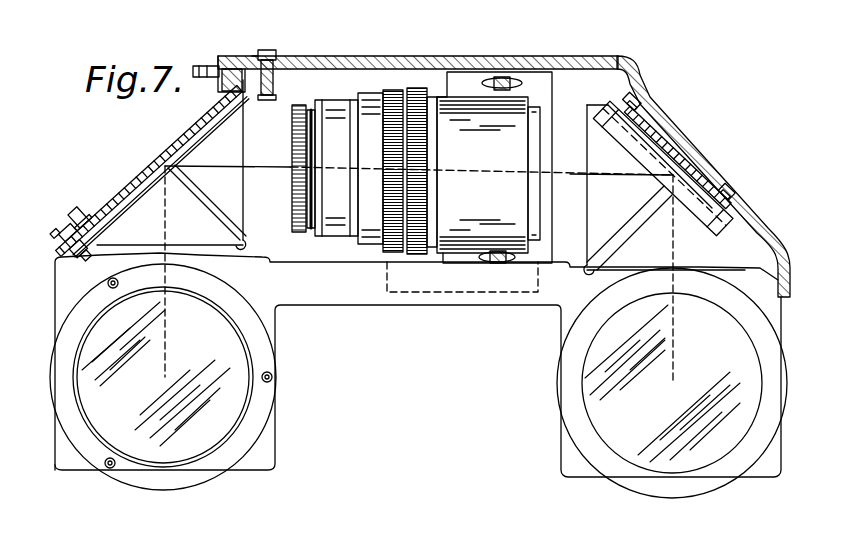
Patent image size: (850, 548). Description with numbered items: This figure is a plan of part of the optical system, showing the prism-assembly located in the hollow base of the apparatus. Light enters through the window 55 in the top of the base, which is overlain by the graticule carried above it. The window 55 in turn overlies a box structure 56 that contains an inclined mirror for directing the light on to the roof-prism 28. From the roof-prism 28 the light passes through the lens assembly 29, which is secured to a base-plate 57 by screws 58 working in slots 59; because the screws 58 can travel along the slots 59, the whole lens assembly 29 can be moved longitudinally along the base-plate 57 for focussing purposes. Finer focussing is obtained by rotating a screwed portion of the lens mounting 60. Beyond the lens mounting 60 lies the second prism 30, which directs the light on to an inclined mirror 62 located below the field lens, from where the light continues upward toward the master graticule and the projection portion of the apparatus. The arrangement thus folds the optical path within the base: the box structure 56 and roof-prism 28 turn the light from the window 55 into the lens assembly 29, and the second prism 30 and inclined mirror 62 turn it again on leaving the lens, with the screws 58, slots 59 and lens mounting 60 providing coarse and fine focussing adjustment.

The roof-prism 28 is at (723, 257).
The lens assembly 29 is at (462, 97).
The second prism 30 is at (146, 187).
The window 55 is at (743, 360).
The box structure 56 is at (773, 313).
The base-plate 57 is at (540, 78).
The screws 58 is at (502, 78).
The slots 59 is at (517, 76).
The lens mounting 60 is at (420, 88).
The inclined mirror 62 is at (97, 318).